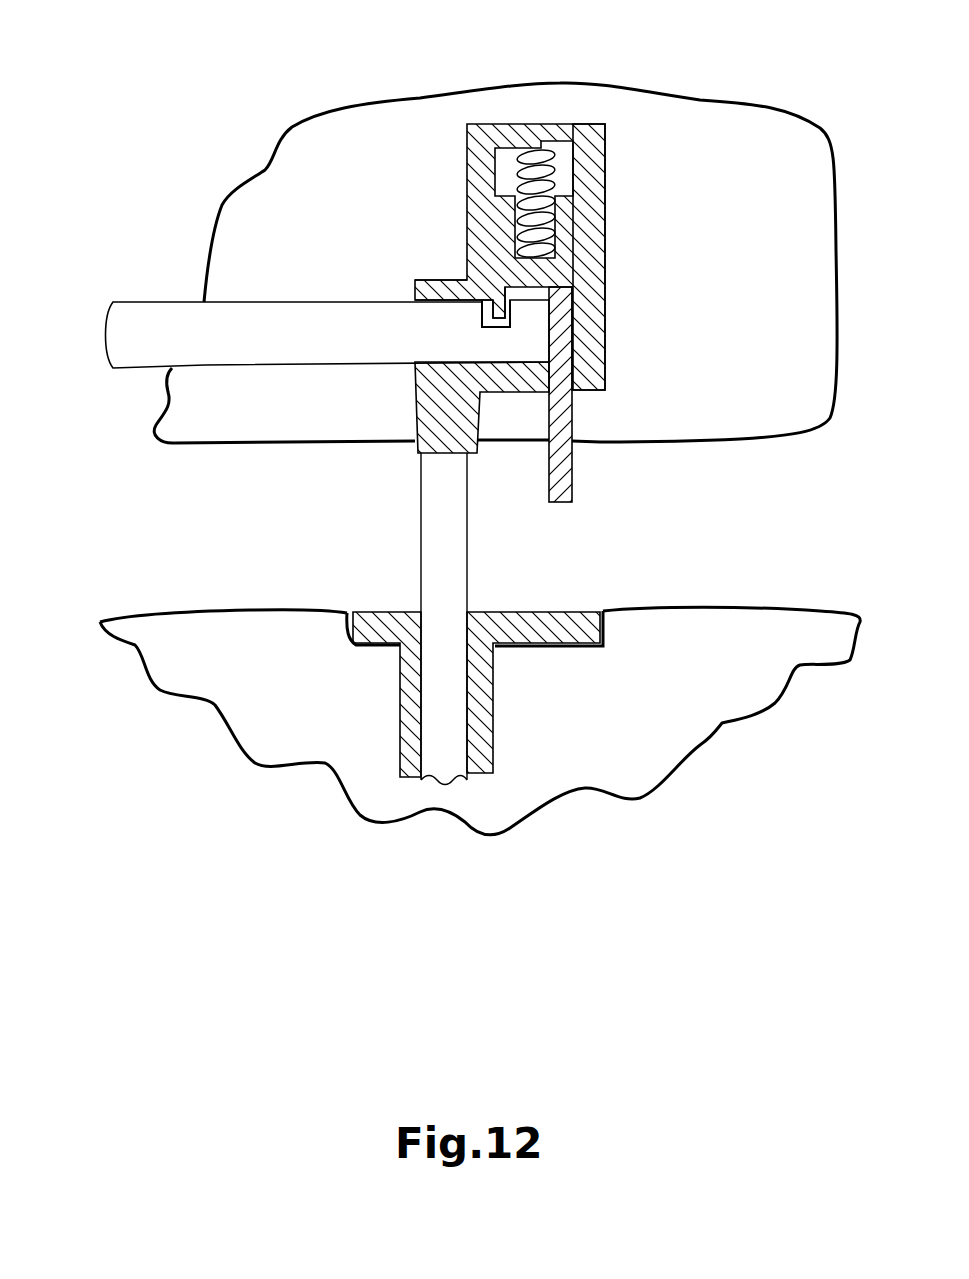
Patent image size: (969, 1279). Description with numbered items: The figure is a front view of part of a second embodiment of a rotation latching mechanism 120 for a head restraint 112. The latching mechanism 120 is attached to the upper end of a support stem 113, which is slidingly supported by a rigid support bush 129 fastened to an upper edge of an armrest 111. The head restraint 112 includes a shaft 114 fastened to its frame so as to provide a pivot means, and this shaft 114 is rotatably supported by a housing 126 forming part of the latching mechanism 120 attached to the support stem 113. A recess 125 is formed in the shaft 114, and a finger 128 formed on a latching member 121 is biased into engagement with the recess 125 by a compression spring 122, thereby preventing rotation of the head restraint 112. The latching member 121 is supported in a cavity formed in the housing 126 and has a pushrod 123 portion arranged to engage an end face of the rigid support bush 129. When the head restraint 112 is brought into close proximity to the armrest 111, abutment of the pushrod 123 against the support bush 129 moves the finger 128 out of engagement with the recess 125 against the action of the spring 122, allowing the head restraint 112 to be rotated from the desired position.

The rotation latching mechanism 120 is at (158, 148).
The head restraint 112 is at (158, 443).
The shaft 114 is at (147, 302).
The housing 126 is at (463, 180).
The latching member 121 is at (578, 177).
The recess 125 is at (420, 262).
The compression spring 122 is at (518, 168).
The finger 128 is at (482, 325).
The pushrod 123 is at (574, 471).
The support stem 113 is at (420, 530).
The rigid support bush 129 is at (380, 613).
The armrest 111 is at (195, 613).